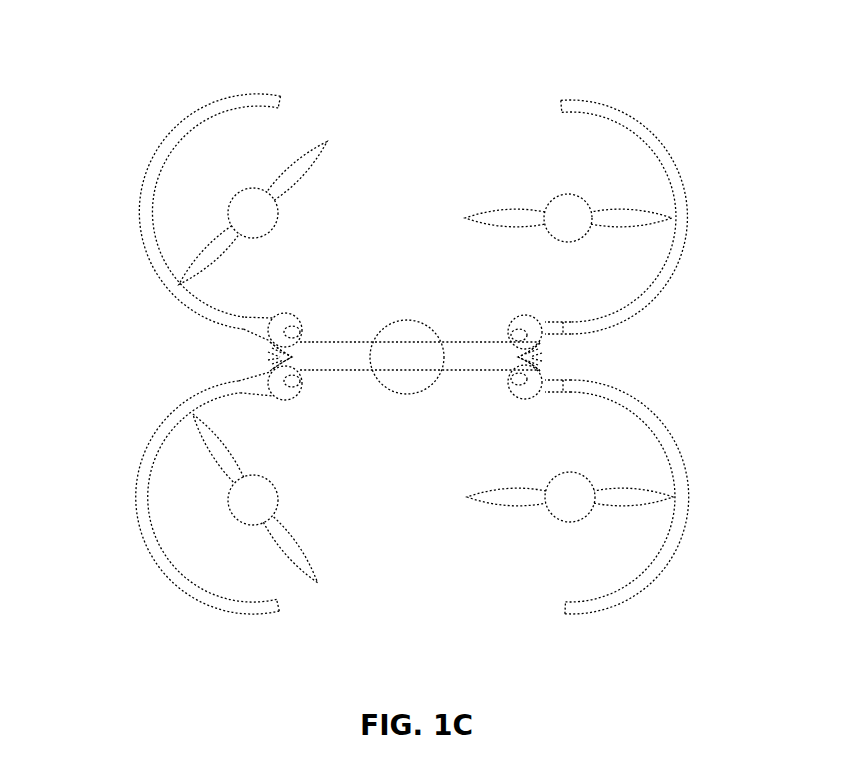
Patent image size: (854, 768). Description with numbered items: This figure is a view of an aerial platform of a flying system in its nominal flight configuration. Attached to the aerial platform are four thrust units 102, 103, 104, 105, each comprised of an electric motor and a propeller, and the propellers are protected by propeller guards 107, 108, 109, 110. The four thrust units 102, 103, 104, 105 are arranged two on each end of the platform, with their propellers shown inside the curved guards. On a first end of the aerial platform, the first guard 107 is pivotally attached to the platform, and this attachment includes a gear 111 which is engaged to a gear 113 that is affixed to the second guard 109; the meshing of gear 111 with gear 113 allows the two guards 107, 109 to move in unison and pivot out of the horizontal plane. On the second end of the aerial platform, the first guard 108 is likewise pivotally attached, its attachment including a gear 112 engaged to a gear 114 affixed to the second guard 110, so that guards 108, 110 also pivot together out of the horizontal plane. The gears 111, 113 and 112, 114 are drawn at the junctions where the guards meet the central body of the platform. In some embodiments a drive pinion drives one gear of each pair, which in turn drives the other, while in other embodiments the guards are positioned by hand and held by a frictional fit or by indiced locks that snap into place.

The thrust unit 102 is at (258, 189).
The thrust unit 103 is at (567, 191).
The thrust unit 104 is at (255, 476).
The thrust unit 105 is at (566, 474).
The propeller guard 107 is at (167, 132).
The propeller guard 108 is at (628, 112).
The propeller guard 109 is at (167, 582).
The propeller guard 110 is at (658, 570).
The gear 111 is at (268, 350).
The gear 112 is at (543, 342).
The gear 113 is at (268, 361).
The gear 114 is at (543, 361).